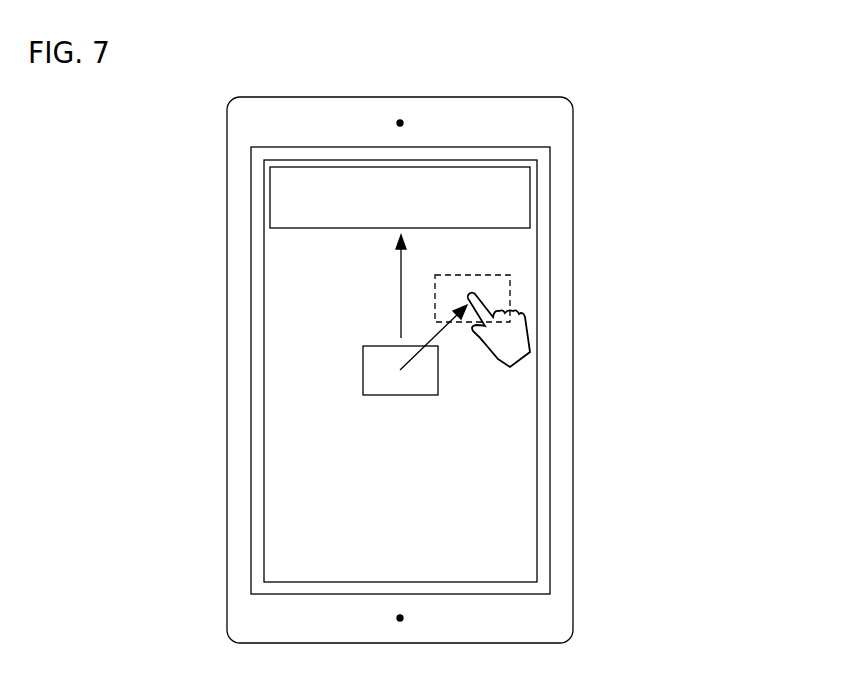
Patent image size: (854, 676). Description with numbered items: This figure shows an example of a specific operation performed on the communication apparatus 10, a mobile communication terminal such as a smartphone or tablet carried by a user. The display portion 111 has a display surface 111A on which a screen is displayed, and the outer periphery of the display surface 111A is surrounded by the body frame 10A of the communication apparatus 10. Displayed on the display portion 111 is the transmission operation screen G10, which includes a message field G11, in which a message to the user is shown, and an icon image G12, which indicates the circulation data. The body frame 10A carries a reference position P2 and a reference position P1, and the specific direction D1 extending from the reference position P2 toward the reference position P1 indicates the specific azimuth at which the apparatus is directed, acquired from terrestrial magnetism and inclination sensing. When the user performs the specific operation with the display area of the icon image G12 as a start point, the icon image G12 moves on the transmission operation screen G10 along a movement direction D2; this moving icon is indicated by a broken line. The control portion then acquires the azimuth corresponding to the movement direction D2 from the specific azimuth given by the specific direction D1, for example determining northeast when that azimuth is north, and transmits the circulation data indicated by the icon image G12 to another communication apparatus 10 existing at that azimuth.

The communication apparatus 10 is at (439, 358).
The body frame 10A is at (574, 180).
The display portion 111 is at (456, 370).
The display surface 111A is at (550, 354).
The transmission operation screen G10 is at (264, 268).
The message field G11 is at (270, 192).
The icon image G12 is at (395, 396).
The specific direction D1 is at (399, 290).
The movement direction D2 is at (447, 325).
The reference position P1 is at (396, 123).
The reference position P2 is at (396, 618).